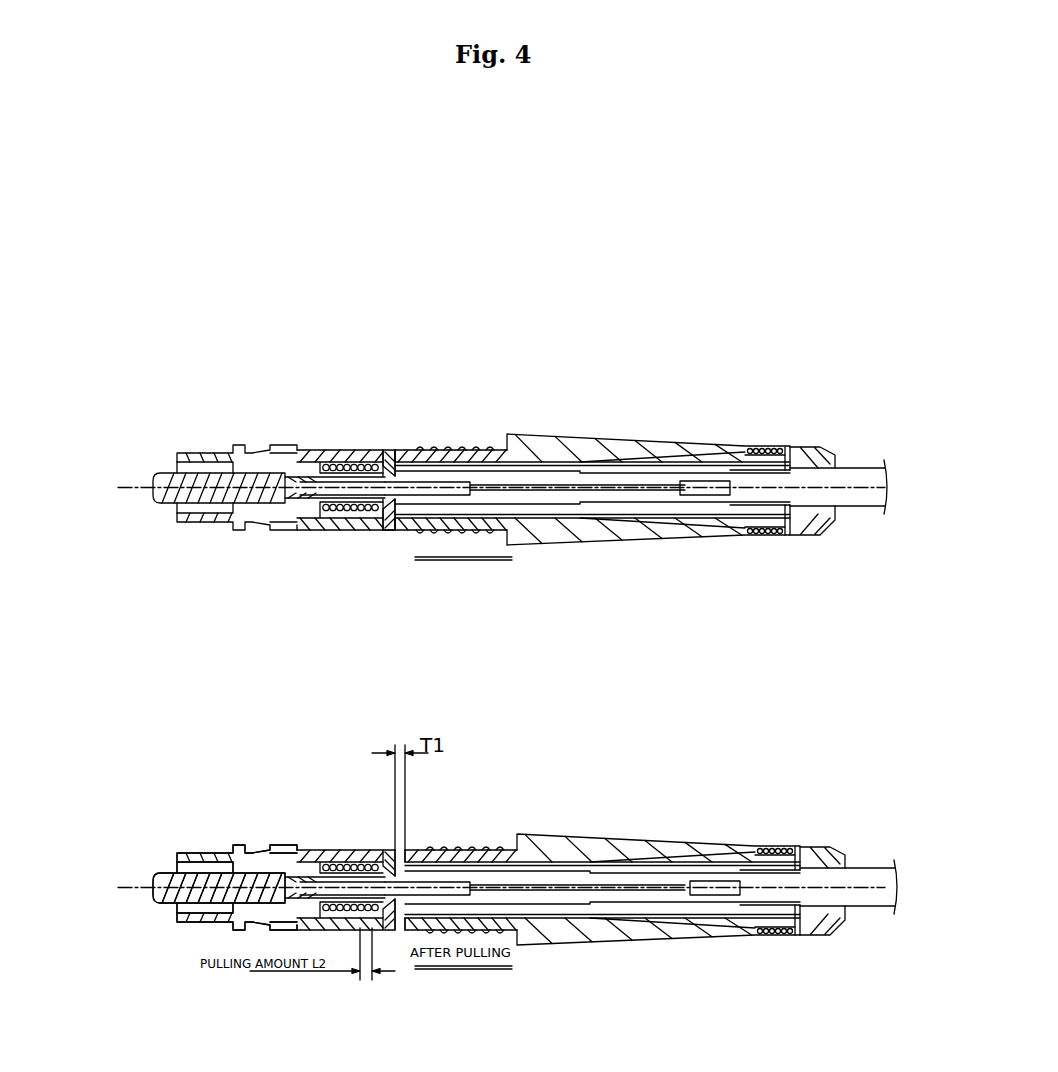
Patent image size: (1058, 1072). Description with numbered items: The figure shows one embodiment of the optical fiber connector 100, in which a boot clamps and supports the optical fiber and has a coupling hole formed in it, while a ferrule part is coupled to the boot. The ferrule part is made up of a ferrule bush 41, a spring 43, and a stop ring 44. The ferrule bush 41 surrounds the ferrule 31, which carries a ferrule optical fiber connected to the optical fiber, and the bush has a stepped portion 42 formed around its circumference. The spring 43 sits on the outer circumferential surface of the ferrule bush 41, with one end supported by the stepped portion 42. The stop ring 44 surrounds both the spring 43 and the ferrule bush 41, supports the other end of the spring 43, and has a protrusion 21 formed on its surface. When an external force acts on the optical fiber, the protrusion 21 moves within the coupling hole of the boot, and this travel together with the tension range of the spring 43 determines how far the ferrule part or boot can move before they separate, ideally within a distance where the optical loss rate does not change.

The optical fiber connector 100 is at (468, 390).
The protrusion 21 is at (392, 450).
The ferrule 31 is at (185, 455).
The ferrule bush 41 is at (420, 452).
The stepped portion 42 is at (301, 455).
The spring 43 is at (346, 463).
The stop ring 44 is at (395, 535).